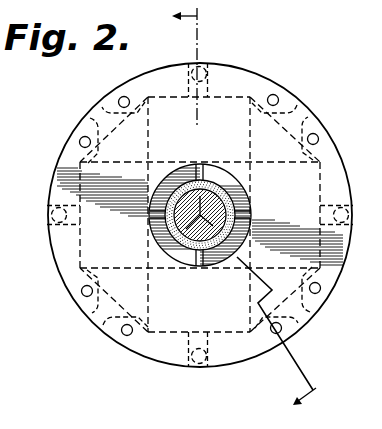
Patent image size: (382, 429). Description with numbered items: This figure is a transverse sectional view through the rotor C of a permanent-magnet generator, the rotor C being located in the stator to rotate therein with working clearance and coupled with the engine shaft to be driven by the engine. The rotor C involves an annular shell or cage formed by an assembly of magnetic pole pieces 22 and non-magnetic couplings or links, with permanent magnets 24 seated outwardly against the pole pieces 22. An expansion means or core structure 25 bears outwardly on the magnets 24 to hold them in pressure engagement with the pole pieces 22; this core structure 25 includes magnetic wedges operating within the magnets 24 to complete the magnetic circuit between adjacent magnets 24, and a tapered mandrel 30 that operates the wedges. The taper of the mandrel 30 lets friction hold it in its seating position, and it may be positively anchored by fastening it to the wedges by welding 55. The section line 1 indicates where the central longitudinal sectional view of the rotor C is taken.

The rotor C is at (271, 77).
The magnetic pole pieces 22 is at (318, 112).
The permanent magnets 24 is at (236, 342).
The core structure 25 is at (246, 201).
The tapered mandrel 30 is at (168, 229).
The welding 55 is at (189, 238).
The section line 1- 1 is at (255, 205).